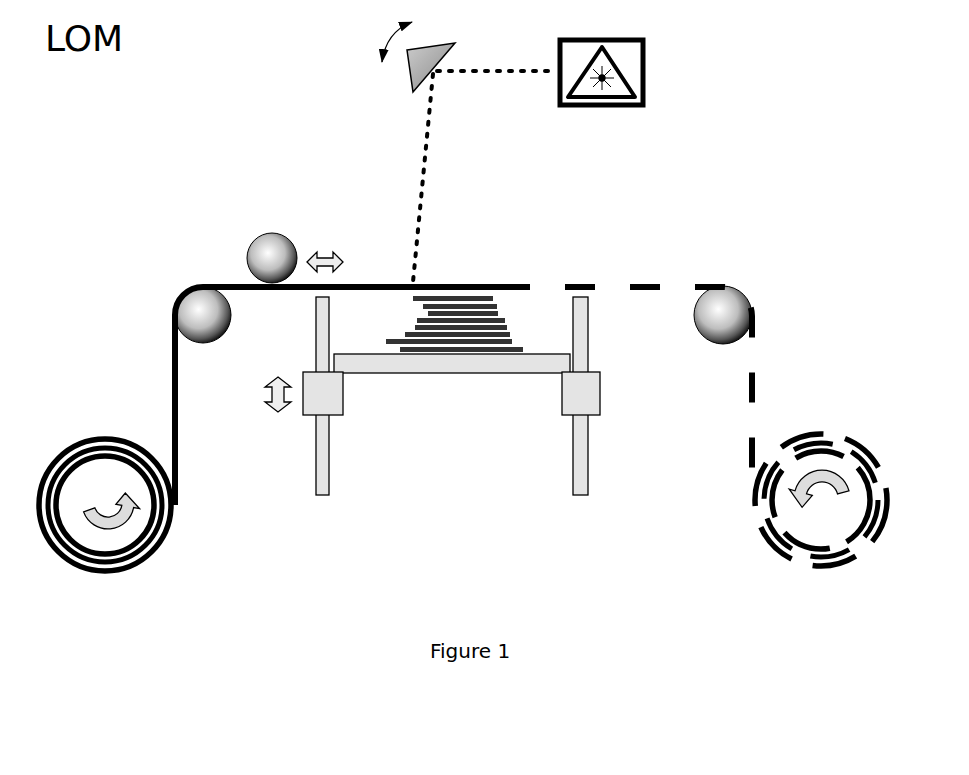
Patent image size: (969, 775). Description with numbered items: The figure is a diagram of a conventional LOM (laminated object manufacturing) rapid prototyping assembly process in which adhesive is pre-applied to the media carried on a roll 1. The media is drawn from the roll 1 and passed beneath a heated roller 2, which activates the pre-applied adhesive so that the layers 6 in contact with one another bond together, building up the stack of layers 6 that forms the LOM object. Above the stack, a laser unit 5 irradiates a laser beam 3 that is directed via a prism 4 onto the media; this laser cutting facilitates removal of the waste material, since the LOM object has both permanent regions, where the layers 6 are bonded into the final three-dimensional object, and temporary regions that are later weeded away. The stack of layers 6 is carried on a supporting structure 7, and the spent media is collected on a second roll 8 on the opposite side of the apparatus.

The roll 1 is at (103, 437).
The heated roller 2 is at (242, 253).
The laser beam 3 is at (398, 267).
The prism 4 is at (410, 56).
The laser unit 5 is at (612, 57).
The layers 6 is at (512, 305).
The build platform 7 is at (607, 387).
The take-up roll 8 is at (838, 432).